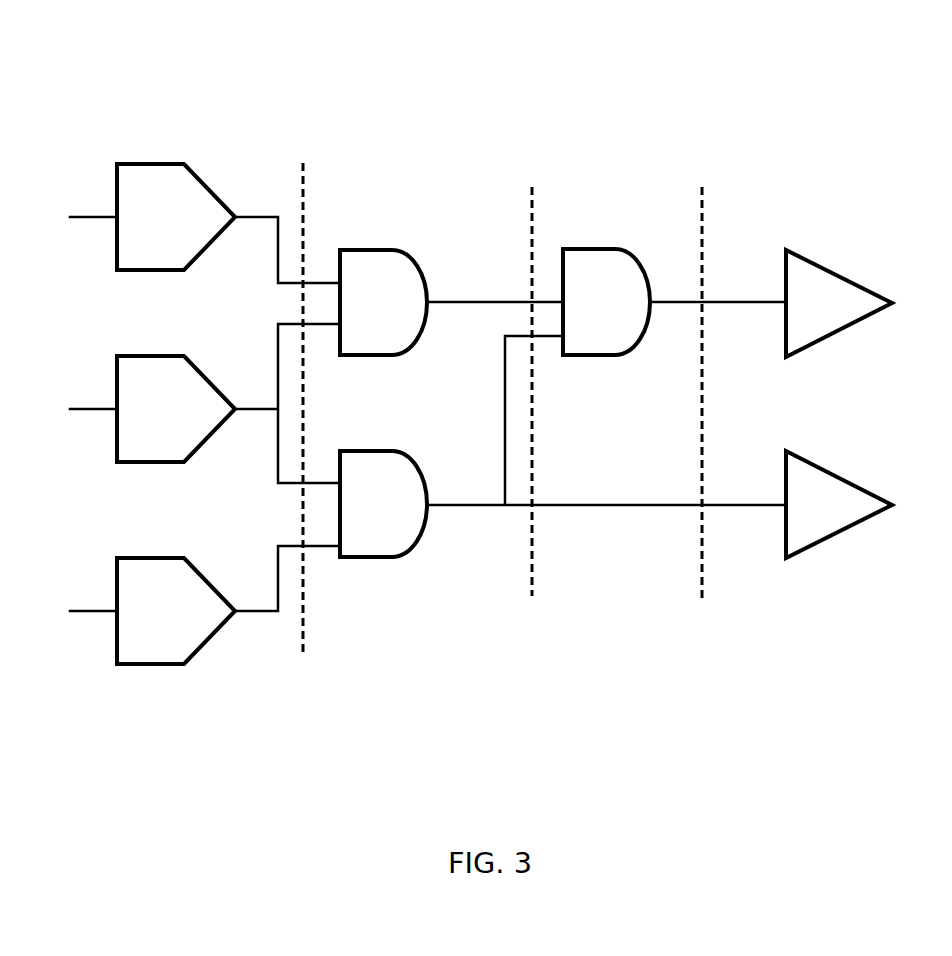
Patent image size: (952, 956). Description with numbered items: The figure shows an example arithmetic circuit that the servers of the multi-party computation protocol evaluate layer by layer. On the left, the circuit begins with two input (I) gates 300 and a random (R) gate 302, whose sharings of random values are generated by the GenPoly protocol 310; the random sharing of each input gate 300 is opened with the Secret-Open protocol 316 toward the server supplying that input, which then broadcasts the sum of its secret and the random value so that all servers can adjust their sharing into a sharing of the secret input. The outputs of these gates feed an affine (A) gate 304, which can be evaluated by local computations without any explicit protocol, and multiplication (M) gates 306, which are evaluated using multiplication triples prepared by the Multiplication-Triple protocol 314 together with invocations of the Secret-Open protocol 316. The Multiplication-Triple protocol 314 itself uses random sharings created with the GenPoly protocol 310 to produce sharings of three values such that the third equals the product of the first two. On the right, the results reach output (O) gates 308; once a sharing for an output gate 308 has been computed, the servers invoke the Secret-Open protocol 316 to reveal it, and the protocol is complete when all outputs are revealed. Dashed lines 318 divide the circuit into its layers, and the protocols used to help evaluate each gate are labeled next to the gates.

The input gate 300 is at (140, 164).
The random gate 302 is at (128, 356).
The affine gate 304 is at (370, 250).
The multiplication gate 306 is at (373, 451).
The output gate 308 is at (883, 297).
The GenPoly protocol 310 is at (247, 135).
The Multiplication-Triple protocol 314 is at (560, 117).
The Secret-Open protocol 316 is at (348, 125).
The dashed lines 318 is at (532, 557).